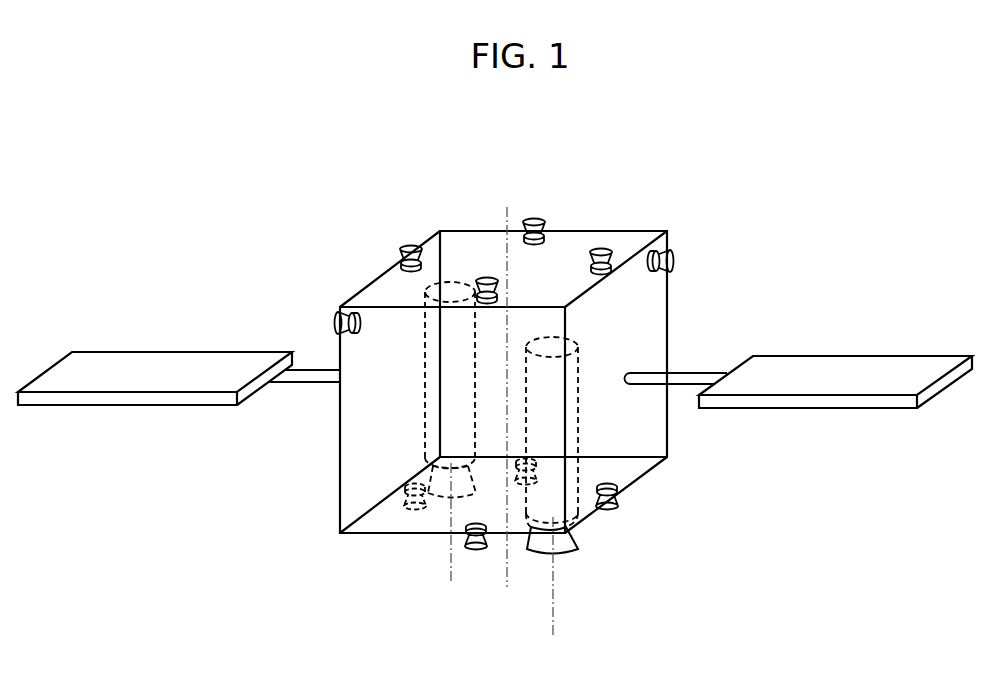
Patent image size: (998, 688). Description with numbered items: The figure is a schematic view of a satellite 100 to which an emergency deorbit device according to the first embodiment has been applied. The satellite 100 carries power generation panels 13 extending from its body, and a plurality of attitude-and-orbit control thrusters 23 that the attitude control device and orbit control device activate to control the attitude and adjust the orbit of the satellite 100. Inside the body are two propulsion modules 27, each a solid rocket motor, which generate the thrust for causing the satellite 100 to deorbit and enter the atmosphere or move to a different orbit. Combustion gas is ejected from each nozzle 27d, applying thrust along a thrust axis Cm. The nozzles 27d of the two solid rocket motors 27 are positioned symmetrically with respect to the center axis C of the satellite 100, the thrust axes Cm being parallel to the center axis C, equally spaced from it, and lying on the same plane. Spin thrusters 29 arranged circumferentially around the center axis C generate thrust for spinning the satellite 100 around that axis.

The satellite 100 is at (288, 220).
The power generation panel 13 is at (153, 367).
The attitude-and-orbit control thruster 23 is at (486, 277).
The propulsion module 27 is at (423, 433).
The nozzle 27d is at (570, 551).
The spin thruster 29 is at (332, 318).
The center axis C is at (507, 414).
The thrust axis Cm is at (504, 569).